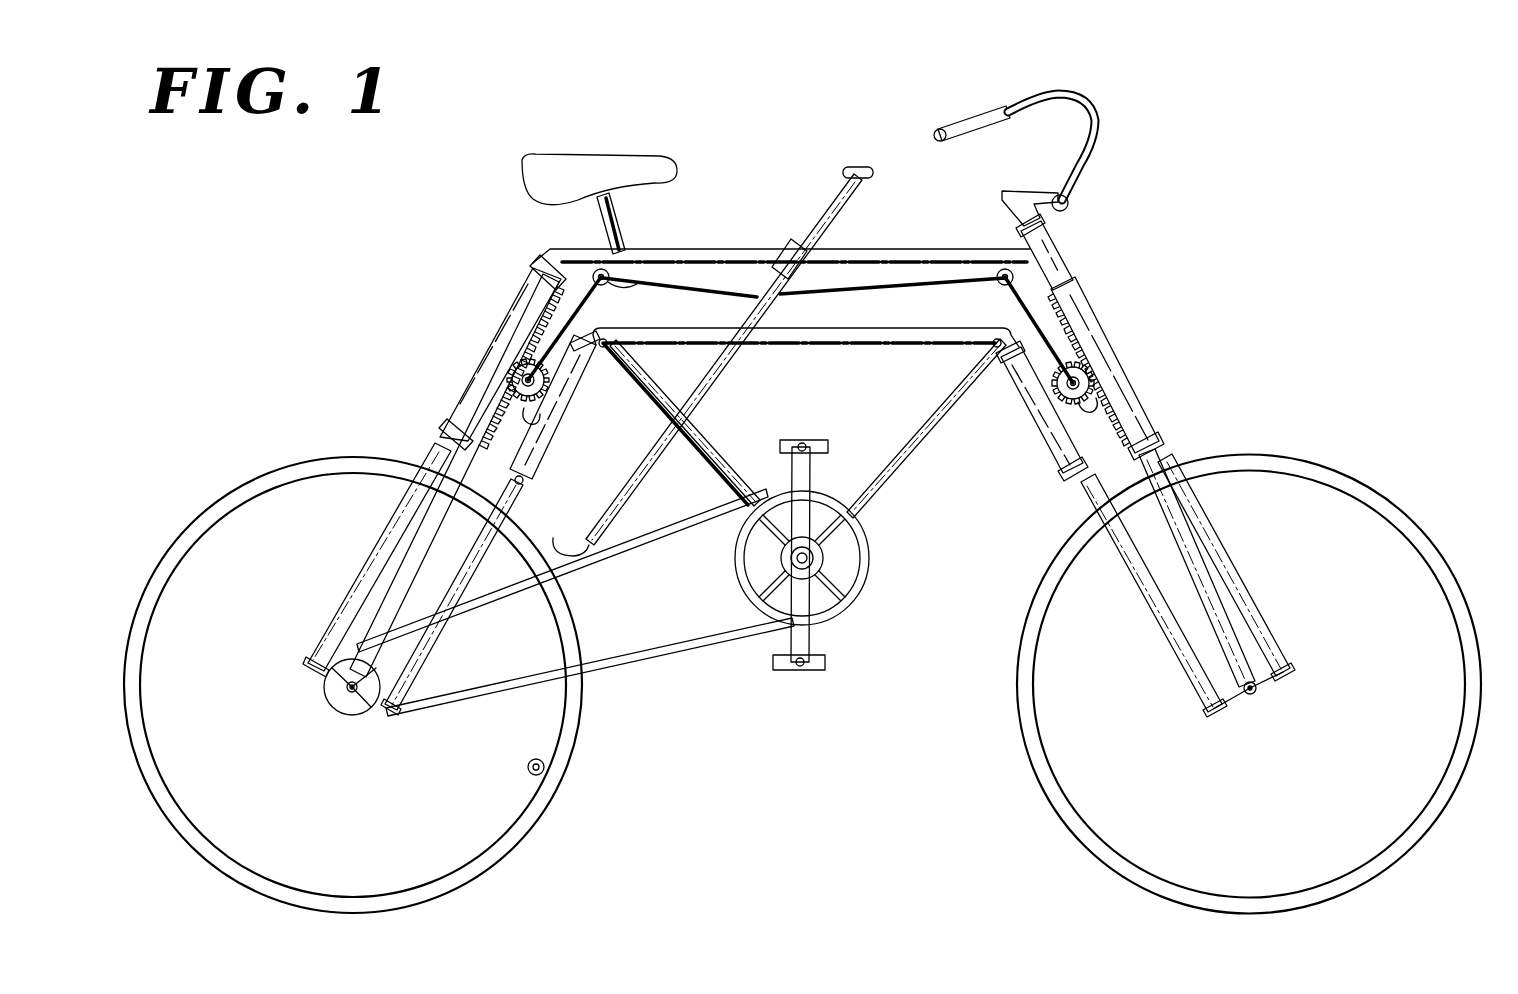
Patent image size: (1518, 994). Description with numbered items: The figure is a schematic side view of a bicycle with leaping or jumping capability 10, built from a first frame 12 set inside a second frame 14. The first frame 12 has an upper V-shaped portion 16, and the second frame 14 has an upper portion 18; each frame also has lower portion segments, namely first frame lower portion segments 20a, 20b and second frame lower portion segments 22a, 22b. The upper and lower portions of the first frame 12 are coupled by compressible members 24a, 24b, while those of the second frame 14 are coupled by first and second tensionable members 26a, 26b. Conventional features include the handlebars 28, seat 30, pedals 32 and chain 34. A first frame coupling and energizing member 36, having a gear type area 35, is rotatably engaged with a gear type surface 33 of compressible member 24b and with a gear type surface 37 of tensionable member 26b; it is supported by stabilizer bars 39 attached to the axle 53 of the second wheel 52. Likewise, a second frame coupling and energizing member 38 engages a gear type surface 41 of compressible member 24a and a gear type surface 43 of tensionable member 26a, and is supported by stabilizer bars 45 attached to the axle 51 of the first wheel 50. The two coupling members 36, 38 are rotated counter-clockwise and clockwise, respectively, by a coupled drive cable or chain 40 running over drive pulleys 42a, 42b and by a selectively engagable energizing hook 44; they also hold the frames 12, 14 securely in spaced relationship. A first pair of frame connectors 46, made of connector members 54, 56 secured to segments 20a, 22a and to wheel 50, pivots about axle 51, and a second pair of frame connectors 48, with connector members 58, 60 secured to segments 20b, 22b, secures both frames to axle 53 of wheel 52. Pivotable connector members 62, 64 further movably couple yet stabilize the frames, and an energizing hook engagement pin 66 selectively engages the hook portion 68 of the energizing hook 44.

The bicycle with leaping capability 10 is at (1296, 72).
The first frame 12 is at (818, 357).
The second frame 14 is at (764, 350).
The upper V-shaped portion 16 is at (790, 345).
The upper portion 18 is at (742, 248).
The first frame lower portion segment 20a is at (533, 488).
The first frame lower portion segment 20b is at (1083, 490).
The second frame lower portion segment 22a is at (442, 445).
The second frame lower portion segment 22b is at (1160, 455).
The compressible member 24a is at (605, 370).
The compressible member 24b is at (1033, 418).
The first tensionable member 26a is at (475, 365).
The second tensionable member 26b is at (1135, 392).
The handlebars 28 is at (1097, 130).
The seat 30 is at (643, 162).
The pedals 32 is at (830, 662).
The gear type surface 33 is at (968, 375).
The chain 34 is at (655, 657).
The gear type area 35 is at (1140, 430).
The first frame coupling and energizing member 36 is at (1110, 375).
The gear type surface 37 is at (1100, 312).
The second frame coupling and energizing member 38 is at (520, 375).
The stabilizer bars 39 is at (1053, 475).
The drive cable 40 is at (905, 278).
The gear type surface 41 is at (560, 430).
The drive pulley 42a is at (612, 279).
The drive pulley 42b is at (985, 268).
The gear type surface 43 is at (545, 275).
The energizing hook 44 is at (858, 167).
The stabilizer bars 45 is at (485, 420).
The first pair of frame connectors 46 is at (322, 714).
The second pair of frame connectors 48 is at (1248, 707).
The first bicycle wheel 50 is at (540, 820).
The axle 51 is at (349, 703).
The second bicycle wheel 52 is at (1460, 585).
The axle 53 is at (1258, 692).
The first connector member 54 is at (288, 688).
The second connector member 56 is at (325, 697).
The first connector member 58 is at (1271, 576).
The second connector member 60 is at (1277, 682).
The first pivotable connector member 62 is at (538, 470).
The second pivotable connector member 64 is at (1170, 462).
The energizing hook engagement pin 66 is at (548, 768).
The hook portion 68 is at (598, 568).